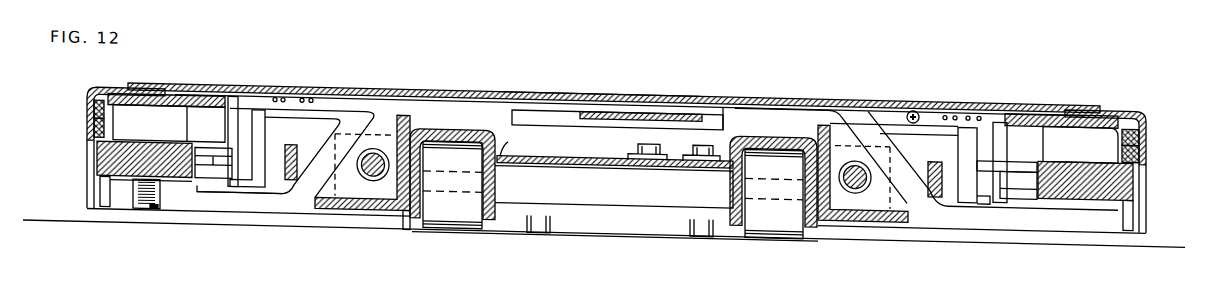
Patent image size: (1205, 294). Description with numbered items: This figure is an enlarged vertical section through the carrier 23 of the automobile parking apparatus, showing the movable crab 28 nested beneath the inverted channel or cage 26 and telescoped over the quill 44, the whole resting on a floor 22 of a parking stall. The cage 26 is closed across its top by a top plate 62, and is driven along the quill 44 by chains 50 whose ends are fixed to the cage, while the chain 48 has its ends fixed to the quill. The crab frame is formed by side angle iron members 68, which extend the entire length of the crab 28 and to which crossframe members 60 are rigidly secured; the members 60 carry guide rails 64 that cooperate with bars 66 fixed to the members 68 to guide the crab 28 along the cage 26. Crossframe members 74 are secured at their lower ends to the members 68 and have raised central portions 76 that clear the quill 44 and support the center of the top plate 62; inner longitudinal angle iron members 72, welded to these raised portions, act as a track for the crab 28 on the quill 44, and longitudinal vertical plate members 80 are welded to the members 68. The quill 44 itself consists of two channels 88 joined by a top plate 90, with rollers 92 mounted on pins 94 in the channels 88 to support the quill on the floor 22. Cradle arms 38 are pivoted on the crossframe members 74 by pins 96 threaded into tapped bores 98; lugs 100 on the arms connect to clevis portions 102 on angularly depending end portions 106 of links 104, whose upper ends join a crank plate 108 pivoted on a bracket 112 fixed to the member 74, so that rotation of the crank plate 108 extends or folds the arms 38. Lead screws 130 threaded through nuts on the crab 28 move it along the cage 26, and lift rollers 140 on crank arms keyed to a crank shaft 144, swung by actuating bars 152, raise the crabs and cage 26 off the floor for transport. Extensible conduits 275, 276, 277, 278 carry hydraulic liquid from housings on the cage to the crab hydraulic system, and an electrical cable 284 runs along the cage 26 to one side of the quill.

The floors 22 is at (47, 221).
The carrier 23 is at (1112, 72).
The cage 26 is at (130, 84).
The movable crab 28 is at (253, 214).
The cradle arms 38 is at (182, 171).
The quill 44 is at (637, 198).
The chain 48 is at (550, 223).
The chains 50 is at (698, 128).
The crossframe members 60 is at (86, 97).
The top plate 62 is at (568, 84).
The guide rails 64 is at (97, 134).
The bars 66 is at (97, 117).
The side angle iron members 68 is at (107, 206).
The inner longitudinal angle iron members 72 is at (338, 199).
The crossframe members 74 is at (293, 209).
The raised central portions 76 is at (860, 92).
The longitudinal vertical plate members 80 is at (233, 93).
The channels 88 is at (810, 210).
The top plate 90 is at (507, 147).
The rollers 92 is at (457, 214).
The pins 94 is at (422, 182).
The pins 96 is at (178, 110).
The tapped bores 98 is at (133, 196).
The lugs 100 is at (222, 155).
The clevis portions 102 is at (240, 189).
The links 104 is at (340, 104).
The angularly depending end portions 106 is at (257, 106).
The crank plate 108 is at (637, 97).
The bracket 112 is at (540, 111).
The lead screws 130 is at (378, 149).
The lift rollers 140 is at (367, 183).
The crank shaft 144 is at (408, 216).
The actuating bars 152 is at (308, 135).
The extensible conduits 275 is at (282, 91).
The extensible conduits 276 is at (973, 90).
The extensible conduits 277 is at (312, 85).
The extensible conduits 278 is at (950, 90).
The electrical cable 284 is at (913, 91).